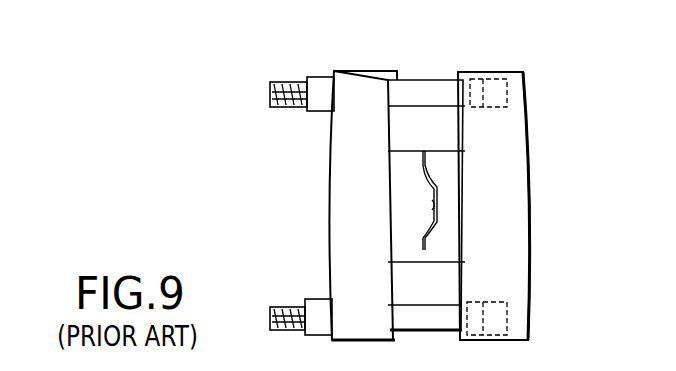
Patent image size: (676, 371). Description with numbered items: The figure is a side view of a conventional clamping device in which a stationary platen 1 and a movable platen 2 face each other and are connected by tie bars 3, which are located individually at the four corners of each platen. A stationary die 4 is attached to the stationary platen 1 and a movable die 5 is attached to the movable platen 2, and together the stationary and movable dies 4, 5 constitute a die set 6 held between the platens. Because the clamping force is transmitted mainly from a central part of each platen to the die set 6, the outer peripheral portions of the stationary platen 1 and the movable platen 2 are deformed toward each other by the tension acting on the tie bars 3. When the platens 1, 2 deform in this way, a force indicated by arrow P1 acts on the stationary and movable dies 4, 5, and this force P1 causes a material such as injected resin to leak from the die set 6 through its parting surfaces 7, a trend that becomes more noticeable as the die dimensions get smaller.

The stationary platen 1 is at (513, 197).
The movable platen 2 is at (338, 197).
The tie bars 3 is at (397, 100).
The stationary die 4 is at (442, 160).
The movable die 5 is at (402, 162).
The die set 6 is at (465, 34).
The parting surfaces 7 is at (430, 213).
The force P1 is at (388, 151).